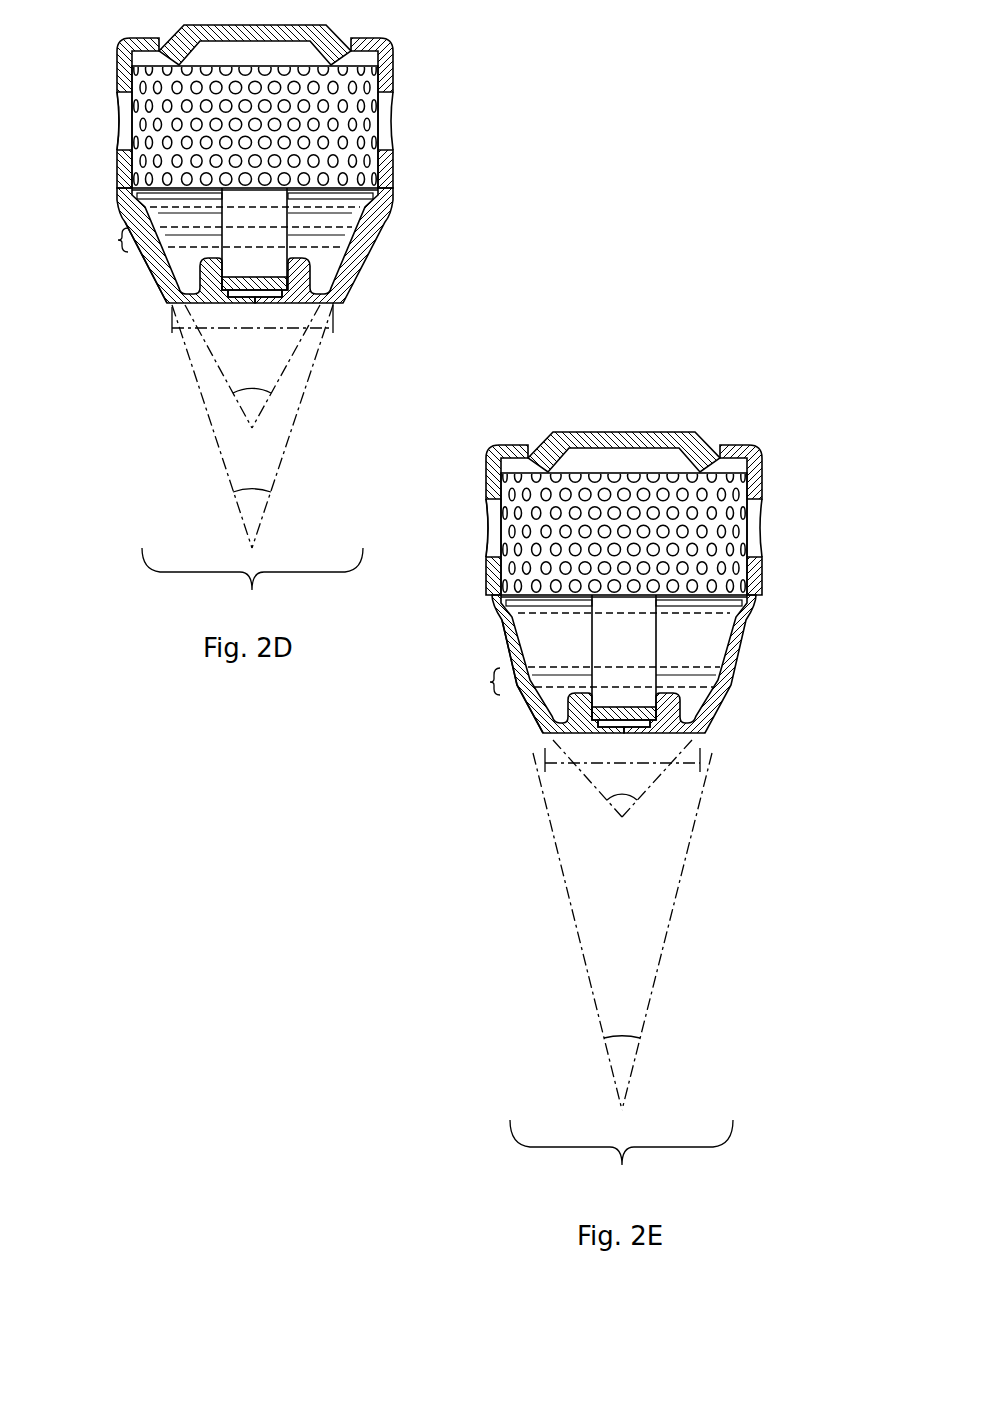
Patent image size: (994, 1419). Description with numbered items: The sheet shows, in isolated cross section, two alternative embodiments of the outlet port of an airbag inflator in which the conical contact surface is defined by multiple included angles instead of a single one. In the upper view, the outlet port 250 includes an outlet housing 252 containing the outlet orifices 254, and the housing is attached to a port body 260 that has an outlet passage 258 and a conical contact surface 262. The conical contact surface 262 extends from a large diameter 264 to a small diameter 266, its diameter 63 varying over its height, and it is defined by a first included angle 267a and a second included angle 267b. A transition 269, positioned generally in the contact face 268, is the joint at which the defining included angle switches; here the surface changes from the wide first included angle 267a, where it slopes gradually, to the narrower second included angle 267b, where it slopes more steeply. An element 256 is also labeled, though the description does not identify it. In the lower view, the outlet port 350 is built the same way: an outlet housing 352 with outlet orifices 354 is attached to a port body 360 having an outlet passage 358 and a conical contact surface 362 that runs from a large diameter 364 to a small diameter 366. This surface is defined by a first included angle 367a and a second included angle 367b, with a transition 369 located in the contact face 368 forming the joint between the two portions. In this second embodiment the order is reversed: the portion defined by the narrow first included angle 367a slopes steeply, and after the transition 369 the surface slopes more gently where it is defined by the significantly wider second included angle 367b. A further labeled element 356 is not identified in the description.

In FIG. 2D, the outlet port 250 is at (313, 177).
In FIG. 2D, the outlet housing 252 is at (388, 47).
In FIG. 2D, the outlet orifices 254 is at (330, 120).
In FIG. 2D, the side wall 256 is at (370, 105).
In FIG. 2D, the outlet passage 258 is at (278, 266).
In FIG. 2D, the port body 260 is at (340, 215).
In FIG. 2D, the conical contact surface 262 is at (250, 235).
In FIG. 2D, the large diameter 264 is at (182, 205).
In FIG. 2D, the small diameter 266 is at (248, 330).
In FIG. 2D, the first included angle 267a is at (252, 388).
In FIG. 2D, the second included angle 267b is at (262, 491).
In FIG. 2D, the contact face 268 is at (118, 240).
In FIG. 2D, the transition 269 is at (172, 268).
In FIG. 2D, the diameter 63 is at (252, 583).
In FIG. 2E, the diameter 63 is at (621, 1157).
In FIG. 2E, the outlet port 350 is at (623, 540).
In FIG. 2E, the outlet housing 352 is at (735, 443).
In FIG. 2E, the outlet orifices 354 is at (653, 521).
In FIG. 2E, the side wall 356 is at (725, 495).
In FIG. 2E, the outlet passage 358 is at (645, 707).
In FIG. 2E, the port body 360 is at (706, 640).
In FIG. 2E, the conical contact surface 362 is at (603, 668).
In FIG. 2E, the large diameter 364 is at (555, 615).
In FIG. 2E, the small diameter 366 is at (625, 763).
In FIG. 2E, the first included angle 367a is at (628, 1036).
In FIG. 2E, the second included angle 367b is at (637, 800).
In FIG. 2E, the contact face 368 is at (490, 682).
In FIG. 2E, the transition 369 is at (540, 705).